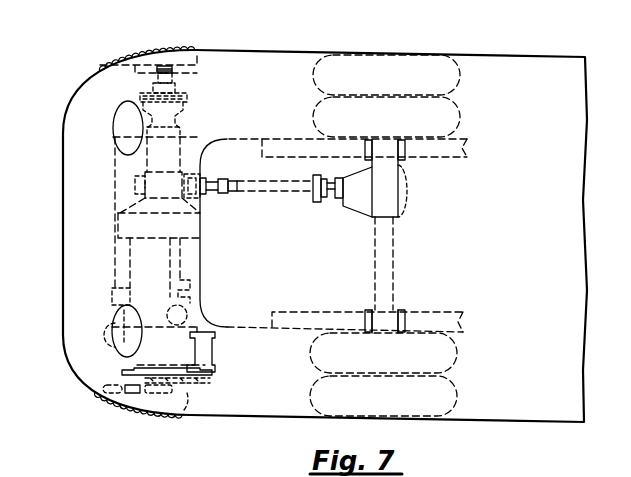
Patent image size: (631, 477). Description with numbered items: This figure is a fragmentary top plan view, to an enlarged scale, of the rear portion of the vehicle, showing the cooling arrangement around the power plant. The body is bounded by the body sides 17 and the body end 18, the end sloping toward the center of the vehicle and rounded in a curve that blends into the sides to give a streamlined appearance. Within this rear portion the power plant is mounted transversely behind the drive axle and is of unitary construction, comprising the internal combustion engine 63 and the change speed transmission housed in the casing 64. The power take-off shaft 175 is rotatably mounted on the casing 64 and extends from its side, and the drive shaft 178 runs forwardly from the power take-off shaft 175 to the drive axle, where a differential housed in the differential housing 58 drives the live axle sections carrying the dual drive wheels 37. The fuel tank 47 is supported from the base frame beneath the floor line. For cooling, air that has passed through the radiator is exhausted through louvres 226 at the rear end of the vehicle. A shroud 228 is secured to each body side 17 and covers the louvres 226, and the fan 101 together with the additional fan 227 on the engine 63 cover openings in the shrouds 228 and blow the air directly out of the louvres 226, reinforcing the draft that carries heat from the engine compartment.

The body side 17 is at (296, 50).
The body end 18 is at (63, 205).
The drive wheels 37 is at (458, 115).
The fuel tank 47 is at (390, 260).
The differential housing 58 is at (394, 178).
The internal combustion engine 63 is at (173, 273).
The casing 64 is at (185, 150).
The fan 101 is at (172, 72).
The power take-off shaft 175 is at (205, 158).
The drive shaft 178 is at (268, 192).
The louvres 226 is at (132, 48).
The fan 227 is at (118, 385).
The shroud 228 is at (109, 67).